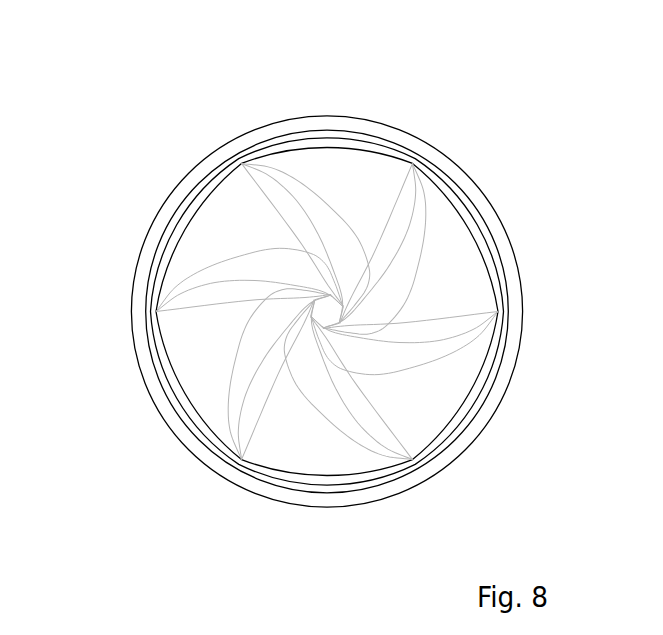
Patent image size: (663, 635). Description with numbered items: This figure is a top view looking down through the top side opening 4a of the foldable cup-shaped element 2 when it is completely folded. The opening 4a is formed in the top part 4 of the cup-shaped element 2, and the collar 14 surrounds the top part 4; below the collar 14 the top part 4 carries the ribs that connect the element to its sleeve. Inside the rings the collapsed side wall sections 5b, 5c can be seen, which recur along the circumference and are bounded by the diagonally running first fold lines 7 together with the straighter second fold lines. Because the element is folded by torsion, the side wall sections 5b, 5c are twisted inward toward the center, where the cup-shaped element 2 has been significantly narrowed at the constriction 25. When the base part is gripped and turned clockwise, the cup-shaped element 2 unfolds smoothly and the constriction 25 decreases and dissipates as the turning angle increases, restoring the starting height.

The cup-shaped element 2 is at (520, 205).
The top part 4 is at (353, 137).
The opening 4a is at (322, 142).
The collar 14 is at (227, 147).
The side wall section 5b is at (238, 226).
The side wall section 5c is at (179, 333).
The first fold line 7 is at (218, 257).
The constriction 25 is at (268, 432).